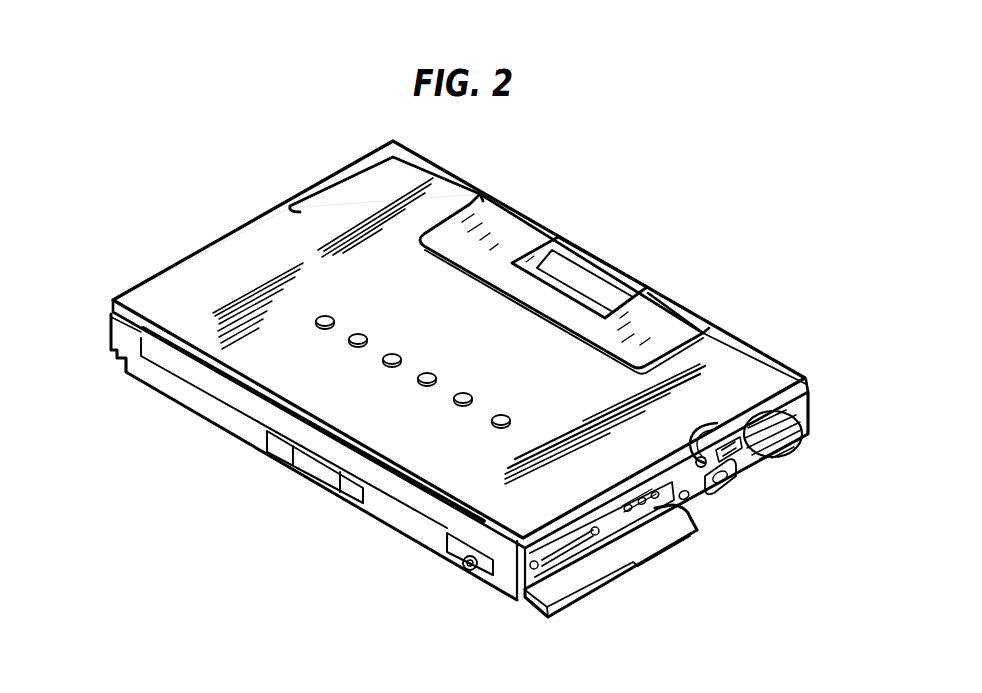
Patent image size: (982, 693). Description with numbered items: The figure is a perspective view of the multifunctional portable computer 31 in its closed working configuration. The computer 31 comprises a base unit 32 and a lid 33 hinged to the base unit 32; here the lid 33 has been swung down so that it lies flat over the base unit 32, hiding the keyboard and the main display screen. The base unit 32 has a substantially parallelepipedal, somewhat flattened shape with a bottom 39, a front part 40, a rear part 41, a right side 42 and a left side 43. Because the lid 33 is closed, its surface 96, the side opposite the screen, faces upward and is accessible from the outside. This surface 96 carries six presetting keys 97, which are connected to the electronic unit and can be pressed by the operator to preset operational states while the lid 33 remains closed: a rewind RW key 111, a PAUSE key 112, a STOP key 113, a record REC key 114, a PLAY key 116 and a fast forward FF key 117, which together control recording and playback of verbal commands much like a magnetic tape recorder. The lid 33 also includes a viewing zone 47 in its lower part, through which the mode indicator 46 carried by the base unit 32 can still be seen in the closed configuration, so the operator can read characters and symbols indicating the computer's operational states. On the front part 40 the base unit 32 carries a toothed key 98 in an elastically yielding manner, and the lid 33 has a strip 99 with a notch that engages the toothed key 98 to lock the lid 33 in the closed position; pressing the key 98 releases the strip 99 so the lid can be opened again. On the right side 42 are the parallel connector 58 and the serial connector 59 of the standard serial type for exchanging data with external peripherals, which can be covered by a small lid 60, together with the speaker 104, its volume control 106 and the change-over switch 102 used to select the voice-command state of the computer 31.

The portable computer 31 is at (662, 252).
The base unit 32 is at (259, 466).
The lid 33 is at (182, 244).
The bottom 39 is at (397, 535).
The front part 40 is at (217, 410).
The rear part 41 is at (812, 406).
The right side 42 is at (740, 463).
The left side 43 is at (108, 330).
The mode indicator 46 is at (597, 290).
The viewing zone 47 is at (531, 254).
The parallel connector 58 is at (575, 550).
The serial connector 59 is at (645, 510).
The small lid 60 is at (565, 592).
The surface 96 is at (270, 237).
The presetting keys 97 is at (315, 295).
The toothed key 98 is at (318, 462).
The strip 99 is at (457, 527).
The change-over switch 102 is at (717, 492).
The speaker 104 is at (797, 428).
The volume control 106 is at (768, 460).
The RW key 111 is at (330, 316).
The PAUSE key 112 is at (363, 334).
The STOP key 113 is at (397, 354).
The REC key 114 is at (432, 373).
The PLAY key 116 is at (468, 393).
The FF key 117 is at (505, 414).